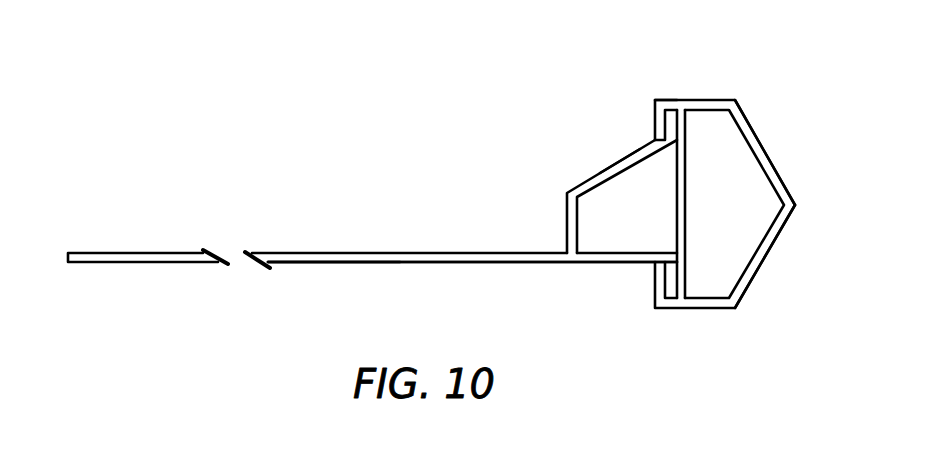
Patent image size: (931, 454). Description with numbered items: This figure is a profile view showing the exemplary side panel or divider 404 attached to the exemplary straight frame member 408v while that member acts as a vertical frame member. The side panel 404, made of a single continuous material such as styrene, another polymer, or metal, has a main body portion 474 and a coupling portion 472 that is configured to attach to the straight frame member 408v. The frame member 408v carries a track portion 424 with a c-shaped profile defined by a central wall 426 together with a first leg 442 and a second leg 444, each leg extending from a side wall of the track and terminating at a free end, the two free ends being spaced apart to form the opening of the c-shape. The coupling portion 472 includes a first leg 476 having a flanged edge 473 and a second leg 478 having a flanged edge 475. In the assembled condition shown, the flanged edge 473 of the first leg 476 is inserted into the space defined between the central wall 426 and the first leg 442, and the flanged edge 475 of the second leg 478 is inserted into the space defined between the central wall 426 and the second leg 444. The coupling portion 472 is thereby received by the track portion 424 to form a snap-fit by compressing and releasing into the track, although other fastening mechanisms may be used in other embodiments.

The side panel or divider 404 is at (387, 239).
The straight frame member 408v is at (783, 137).
The track portion 424 is at (685, 96).
The central wall 426 is at (680, 218).
The first leg 442 is at (660, 283).
The second leg 444 is at (665, 123).
The coupling portion 472 is at (591, 177).
The flanged edge 473 is at (677, 284).
The main body portion 474 is at (341, 265).
The flanged edge 475 is at (680, 122).
The first leg 476 is at (617, 258).
The second leg 478 is at (629, 168).